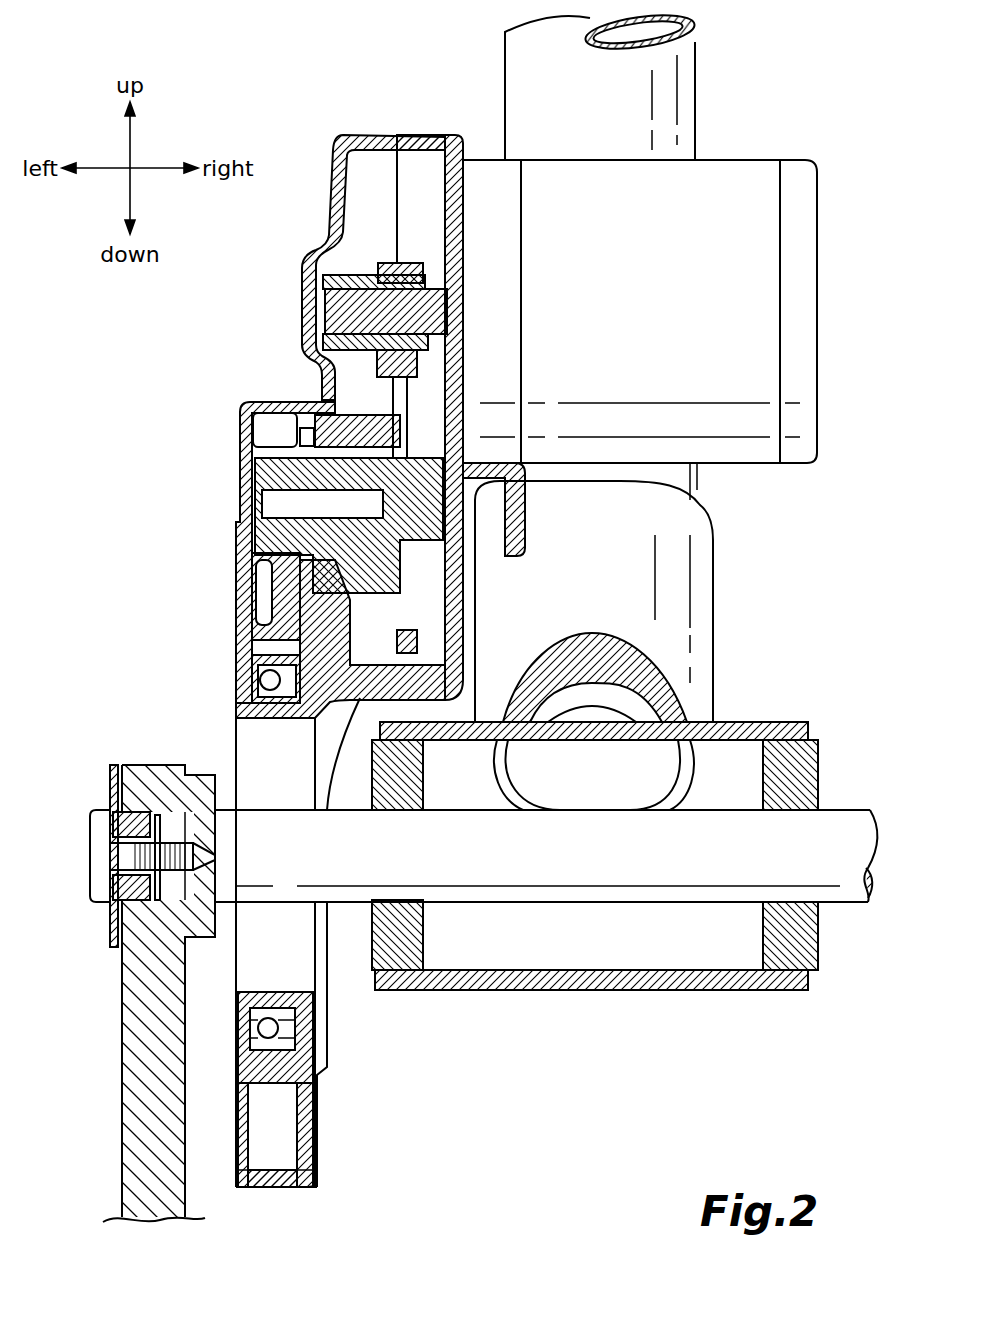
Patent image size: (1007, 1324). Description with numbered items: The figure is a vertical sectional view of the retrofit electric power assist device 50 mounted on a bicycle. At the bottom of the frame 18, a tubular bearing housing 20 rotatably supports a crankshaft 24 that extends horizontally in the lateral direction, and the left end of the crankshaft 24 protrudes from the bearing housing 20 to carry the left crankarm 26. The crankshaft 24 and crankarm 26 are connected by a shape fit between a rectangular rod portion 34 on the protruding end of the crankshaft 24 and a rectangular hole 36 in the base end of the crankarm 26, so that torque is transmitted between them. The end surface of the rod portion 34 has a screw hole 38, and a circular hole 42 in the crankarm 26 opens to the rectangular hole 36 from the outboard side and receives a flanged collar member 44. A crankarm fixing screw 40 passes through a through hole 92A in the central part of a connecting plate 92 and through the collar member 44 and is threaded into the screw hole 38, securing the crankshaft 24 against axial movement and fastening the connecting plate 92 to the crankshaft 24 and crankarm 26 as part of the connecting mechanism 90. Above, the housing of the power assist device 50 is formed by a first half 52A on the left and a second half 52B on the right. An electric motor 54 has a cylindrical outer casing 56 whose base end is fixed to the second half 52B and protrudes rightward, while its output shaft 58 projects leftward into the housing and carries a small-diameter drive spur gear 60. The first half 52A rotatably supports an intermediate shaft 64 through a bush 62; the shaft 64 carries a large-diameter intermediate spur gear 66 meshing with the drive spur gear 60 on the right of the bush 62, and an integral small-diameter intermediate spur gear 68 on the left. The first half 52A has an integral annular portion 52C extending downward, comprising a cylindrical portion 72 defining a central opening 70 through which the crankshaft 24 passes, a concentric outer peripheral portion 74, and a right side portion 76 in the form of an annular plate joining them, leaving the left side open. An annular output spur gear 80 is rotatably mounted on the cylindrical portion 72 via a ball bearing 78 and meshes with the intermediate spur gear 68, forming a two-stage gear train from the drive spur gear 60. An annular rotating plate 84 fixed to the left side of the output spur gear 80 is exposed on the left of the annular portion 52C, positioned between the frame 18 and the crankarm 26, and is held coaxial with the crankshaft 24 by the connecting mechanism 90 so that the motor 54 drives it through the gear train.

The structural frame 18 is at (686, 100).
The tubular bearing housing 20 is at (763, 722).
The crankshaft 24 is at (546, 891).
The left crankarm 26 is at (144, 952).
The rectangular rod portion 34 is at (205, 835).
The rectangular hole 36 is at (217, 872).
The screw hole 38 is at (180, 826).
The crankarm fixing screw 40 is at (101, 856).
The circular hole 42 is at (142, 813).
The flanged collar member 44 is at (127, 887).
The electric power assist device 50 is at (350, 397).
The first half 52A is at (368, 138).
The second half 52B is at (432, 142).
The annular portion 52C is at (313, 1182).
The electric motor 54 is at (674, 311).
The cylindrical outer casing 56 is at (763, 367).
The output shaft 58 is at (333, 308).
The drive spur gear 60 is at (410, 262).
The bush 62 is at (255, 435).
The intermediate shaft 64 is at (488, 552).
The large-diameter intermediate spur gear 66 is at (418, 643).
The small-diameter intermediate spur gear 68 is at (250, 443).
The central opening 70 is at (236, 976).
The cylindrical portion 72 is at (280, 983).
The outer peripheral portion 74 is at (267, 1193).
The right side portion 76 is at (313, 1130).
The ball bearing 78 is at (287, 1025).
The output spur gear 80 is at (262, 560).
The rotating plate 84 is at (237, 1167).
The connecting mechanism 90 is at (101, 852).
The connecting plate 92 is at (108, 938).
The through hole 92A is at (110, 860).